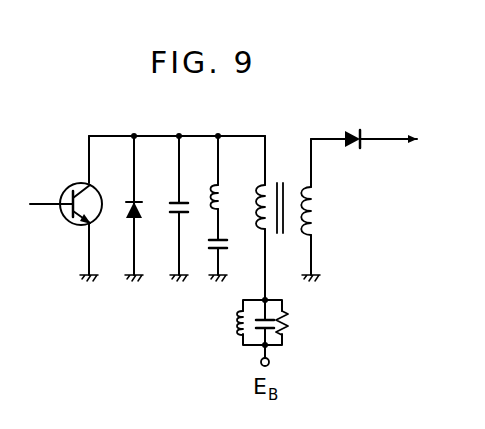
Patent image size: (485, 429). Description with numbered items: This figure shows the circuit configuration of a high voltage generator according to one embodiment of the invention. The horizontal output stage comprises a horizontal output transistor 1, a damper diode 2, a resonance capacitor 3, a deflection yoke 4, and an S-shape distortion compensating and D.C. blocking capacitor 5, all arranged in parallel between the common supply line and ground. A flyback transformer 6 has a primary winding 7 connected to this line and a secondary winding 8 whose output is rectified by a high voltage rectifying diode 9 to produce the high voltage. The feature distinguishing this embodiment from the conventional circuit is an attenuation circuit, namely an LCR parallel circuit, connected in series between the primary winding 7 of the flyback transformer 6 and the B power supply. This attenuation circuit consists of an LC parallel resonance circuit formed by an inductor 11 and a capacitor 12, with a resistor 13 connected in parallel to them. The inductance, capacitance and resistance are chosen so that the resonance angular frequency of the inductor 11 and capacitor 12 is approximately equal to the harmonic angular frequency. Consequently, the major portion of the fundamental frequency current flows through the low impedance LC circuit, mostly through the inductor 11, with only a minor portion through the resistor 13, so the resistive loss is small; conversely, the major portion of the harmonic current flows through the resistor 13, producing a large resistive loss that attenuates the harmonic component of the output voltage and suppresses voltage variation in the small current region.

The horizontal output transistor 1 is at (98, 189).
The damper diode 2 is at (144, 214).
The resonance capacitor 3 is at (187, 207).
The deflection yoke 4 is at (226, 207).
The S-shape distortion compensating and D.C. blocking capacitor 5 is at (209, 244).
The flyback transformer 6 is at (287, 211).
The primary winding 7 is at (258, 224).
The secondary winding 8 is at (314, 212).
The high voltage rectifying diode 9 is at (353, 147).
The inductor 11 is at (242, 321).
The capacitor 12 is at (259, 326).
The resistor 13 is at (289, 321).